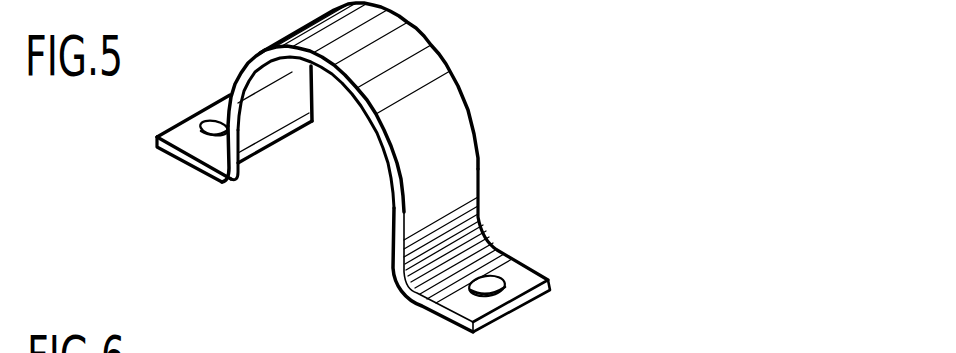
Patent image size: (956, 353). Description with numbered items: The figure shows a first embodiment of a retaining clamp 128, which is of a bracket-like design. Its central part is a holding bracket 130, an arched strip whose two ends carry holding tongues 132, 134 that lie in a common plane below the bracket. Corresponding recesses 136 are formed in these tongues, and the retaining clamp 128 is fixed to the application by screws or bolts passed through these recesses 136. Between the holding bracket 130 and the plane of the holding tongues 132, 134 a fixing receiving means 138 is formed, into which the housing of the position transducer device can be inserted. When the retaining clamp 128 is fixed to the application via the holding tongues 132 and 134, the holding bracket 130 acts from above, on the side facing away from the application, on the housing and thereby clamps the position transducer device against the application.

The retaining clamp 128 is at (380, 177).
The holding bracket 130 is at (434, 91).
The holding tongue 132 is at (201, 146).
The holding tongue 134 is at (511, 261).
The recess 136 is at (470, 291).
The fixing receiving means 138 is at (346, 128).